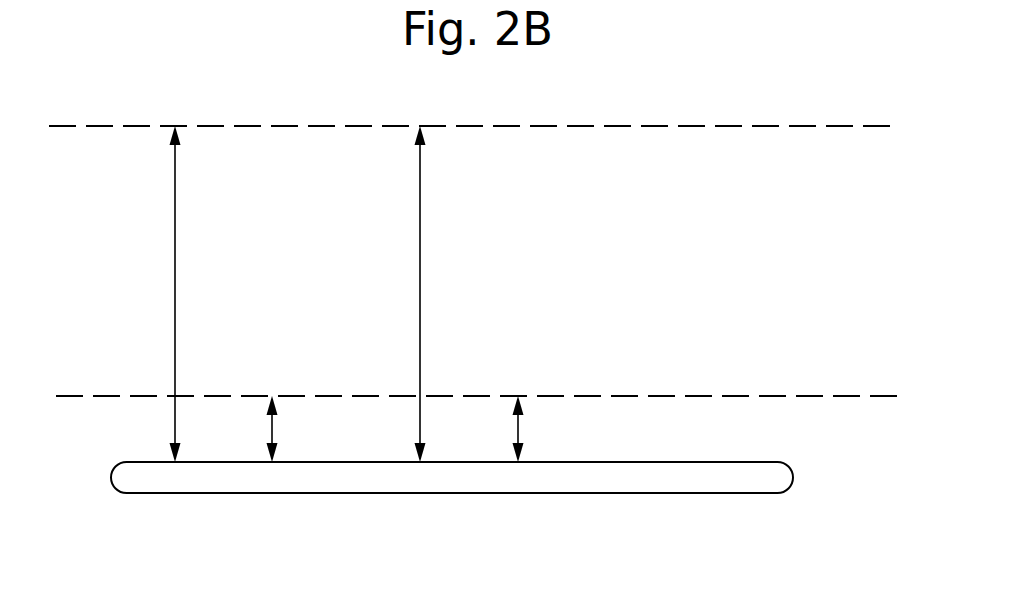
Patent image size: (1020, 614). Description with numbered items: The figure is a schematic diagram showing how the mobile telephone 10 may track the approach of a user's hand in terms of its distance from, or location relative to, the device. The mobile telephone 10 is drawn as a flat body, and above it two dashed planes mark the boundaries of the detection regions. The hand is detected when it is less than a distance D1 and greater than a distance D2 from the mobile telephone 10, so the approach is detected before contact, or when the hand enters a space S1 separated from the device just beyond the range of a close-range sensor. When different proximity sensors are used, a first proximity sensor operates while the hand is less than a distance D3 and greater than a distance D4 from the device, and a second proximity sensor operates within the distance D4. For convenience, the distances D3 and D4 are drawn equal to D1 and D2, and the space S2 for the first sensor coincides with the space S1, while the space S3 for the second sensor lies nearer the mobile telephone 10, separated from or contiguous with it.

The mobile telephone 10 is at (725, 493).
The distance D1 is at (153, 294).
The distance D2 is at (253, 429).
The distance D3 is at (401, 294).
The distance D4 is at (499, 429).
The space S1 is at (469, 202).
The space S2 is at (469, 202).
The space S3 is at (476, 422).